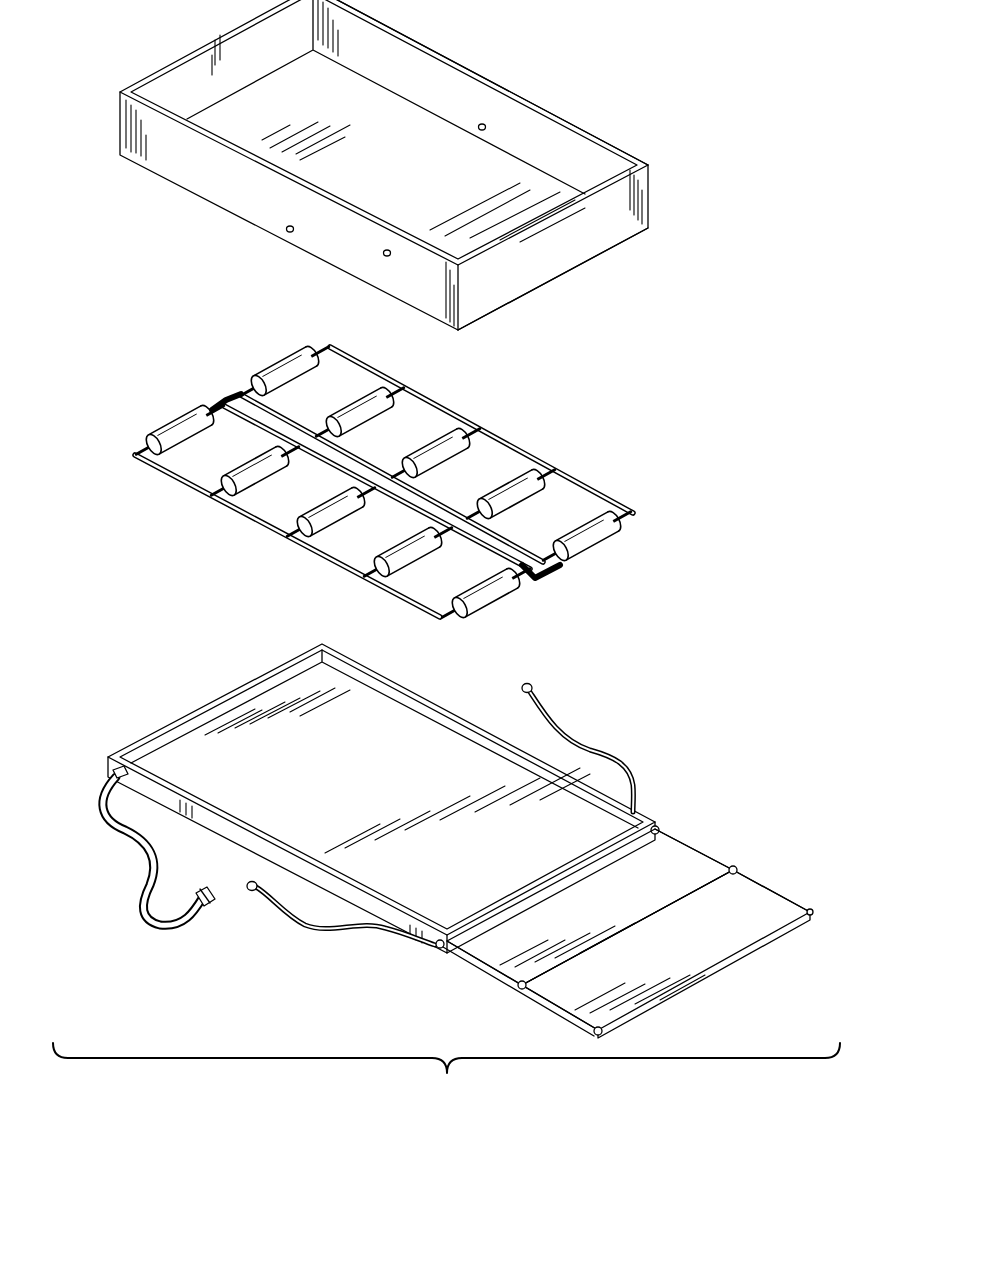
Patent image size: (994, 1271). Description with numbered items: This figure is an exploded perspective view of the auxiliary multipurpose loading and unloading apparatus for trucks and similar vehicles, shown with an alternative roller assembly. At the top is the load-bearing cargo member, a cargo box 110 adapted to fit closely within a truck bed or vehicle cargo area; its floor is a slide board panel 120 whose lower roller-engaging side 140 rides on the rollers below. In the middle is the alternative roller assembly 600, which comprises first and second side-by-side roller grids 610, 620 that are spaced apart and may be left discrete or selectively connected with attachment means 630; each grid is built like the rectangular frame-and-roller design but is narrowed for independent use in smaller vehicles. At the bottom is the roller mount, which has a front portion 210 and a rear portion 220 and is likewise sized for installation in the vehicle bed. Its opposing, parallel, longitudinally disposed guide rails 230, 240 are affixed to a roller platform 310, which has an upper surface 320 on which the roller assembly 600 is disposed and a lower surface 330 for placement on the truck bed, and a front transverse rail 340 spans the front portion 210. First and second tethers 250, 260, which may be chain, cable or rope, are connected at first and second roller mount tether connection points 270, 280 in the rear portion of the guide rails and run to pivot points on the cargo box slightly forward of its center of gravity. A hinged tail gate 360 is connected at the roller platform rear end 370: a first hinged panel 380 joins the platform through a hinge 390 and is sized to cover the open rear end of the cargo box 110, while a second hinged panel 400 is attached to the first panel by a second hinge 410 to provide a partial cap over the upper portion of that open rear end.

The cargo box 110 is at (484, 104).
The slide board panel 120 is at (528, 272).
The roller-engaging side 140 is at (189, 216).
The roller assembly 600 is at (579, 429).
The first roller grid 610 is at (171, 424).
The second roller grid 620 is at (276, 356).
The attachment means 630 is at (226, 396).
The front portion 210 is at (89, 777).
The rear portion 220 is at (706, 758).
The guide rail 230 is at (157, 792).
The guide rail 240 is at (401, 691).
The first tether 250 is at (292, 916).
The second tether 260 is at (600, 731).
The first roller mount tether connection point 270 is at (436, 943).
The second roller mount tether connection point 280 is at (639, 808).
The roller platform 310 is at (277, 697).
The upper surface 320 is at (397, 770).
The lower surface 330 is at (231, 855).
The front transverse rail 340 is at (207, 700).
The hinged tail gate 360 is at (780, 858).
The roller platform rear end 370 is at (519, 893).
The first hinged panel 380 is at (688, 852).
The hinge 390 is at (578, 878).
The second hinged panel 400 is at (762, 896).
The second hinge 410 is at (641, 924).